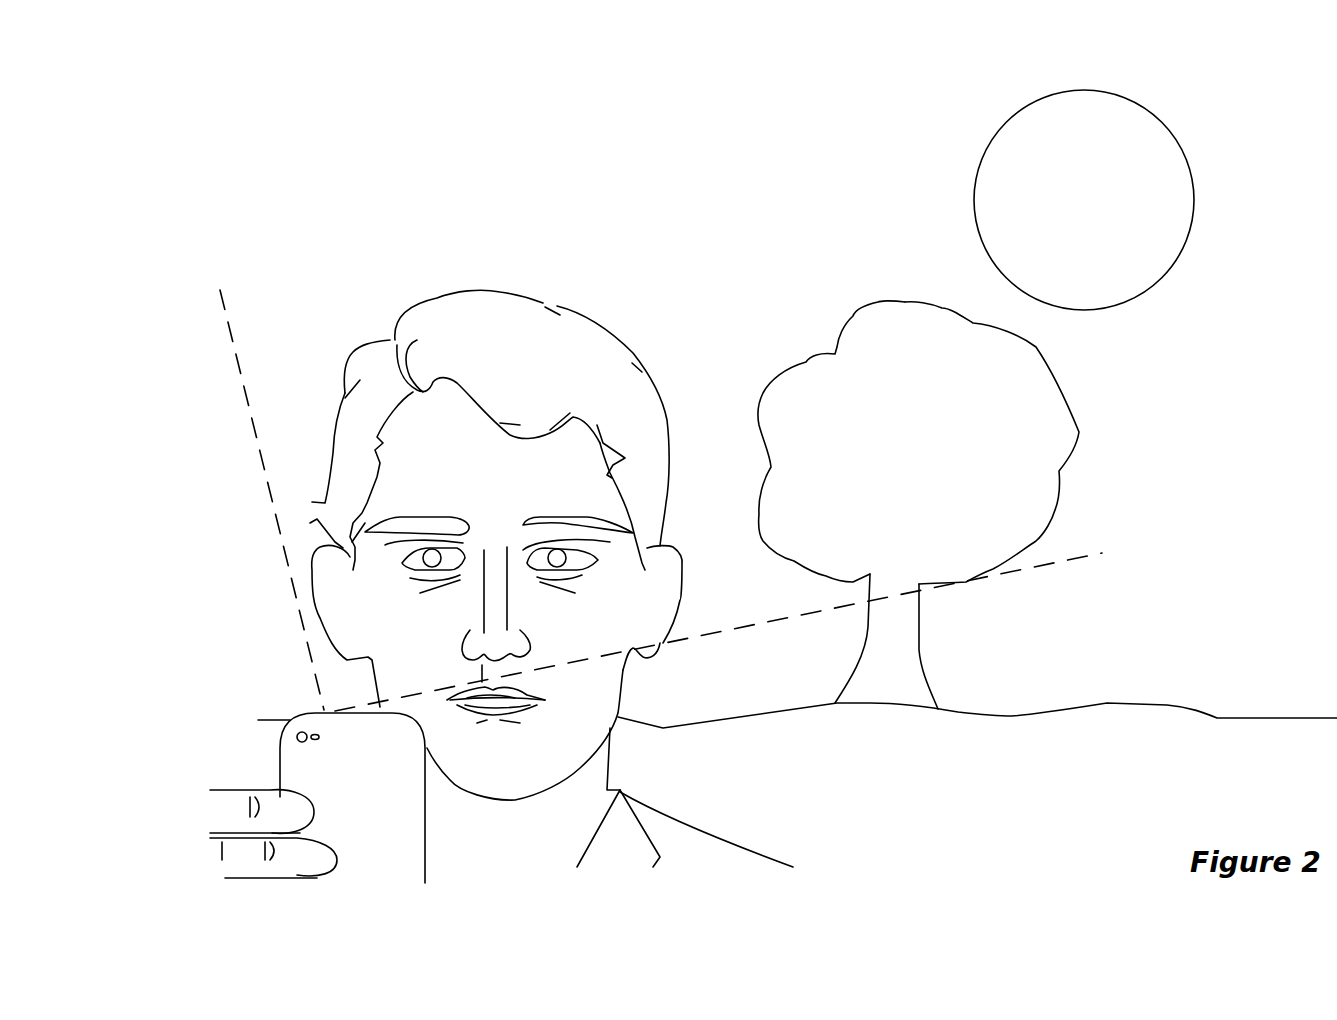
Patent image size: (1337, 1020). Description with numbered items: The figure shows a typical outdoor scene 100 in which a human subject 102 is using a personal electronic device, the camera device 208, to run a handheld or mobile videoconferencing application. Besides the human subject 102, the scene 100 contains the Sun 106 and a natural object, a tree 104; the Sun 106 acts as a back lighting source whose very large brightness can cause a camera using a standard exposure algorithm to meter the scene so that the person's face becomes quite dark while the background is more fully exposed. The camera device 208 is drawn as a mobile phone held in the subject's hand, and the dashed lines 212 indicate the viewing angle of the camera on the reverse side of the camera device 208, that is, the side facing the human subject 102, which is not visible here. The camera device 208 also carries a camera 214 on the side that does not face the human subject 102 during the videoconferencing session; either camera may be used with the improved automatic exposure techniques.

The outdoor scene 100 is at (436, 152).
The human subject 102 is at (512, 292).
The tree 104 is at (904, 301).
The Sun 106 is at (996, 130).
The camera device 208 is at (427, 875).
The dashed lines 212 is at (278, 572).
The camera 214 is at (302, 742).